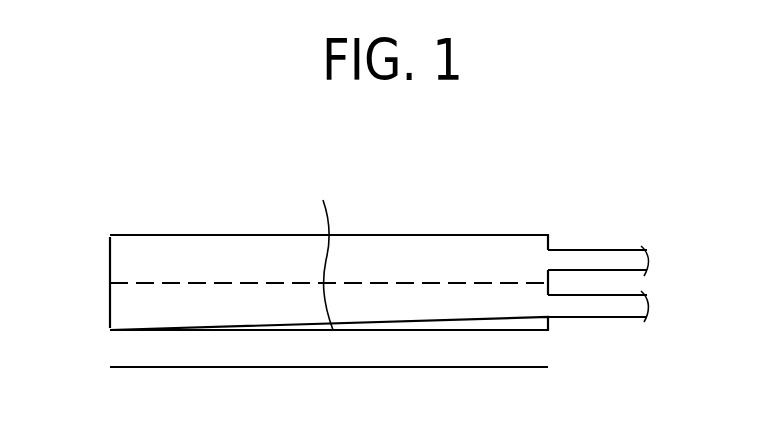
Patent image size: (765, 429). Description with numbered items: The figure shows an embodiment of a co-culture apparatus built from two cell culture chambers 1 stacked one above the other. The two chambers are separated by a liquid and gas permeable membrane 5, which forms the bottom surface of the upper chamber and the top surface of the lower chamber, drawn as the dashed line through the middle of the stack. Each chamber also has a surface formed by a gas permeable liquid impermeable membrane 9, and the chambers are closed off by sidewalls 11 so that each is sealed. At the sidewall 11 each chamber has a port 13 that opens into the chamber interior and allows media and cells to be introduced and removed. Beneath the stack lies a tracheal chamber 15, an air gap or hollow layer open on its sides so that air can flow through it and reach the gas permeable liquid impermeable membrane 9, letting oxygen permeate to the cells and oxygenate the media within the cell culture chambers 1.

The cell culture chamber 1 is at (122, 261).
The liquid and gas permeable membrane 5 is at (432, 283).
The gas permeable liquid impermeable membrane 9 is at (306, 235).
The sidewall 11 is at (110, 244).
The port 13 is at (626, 258).
The tracheal chamber 15 is at (538, 348).